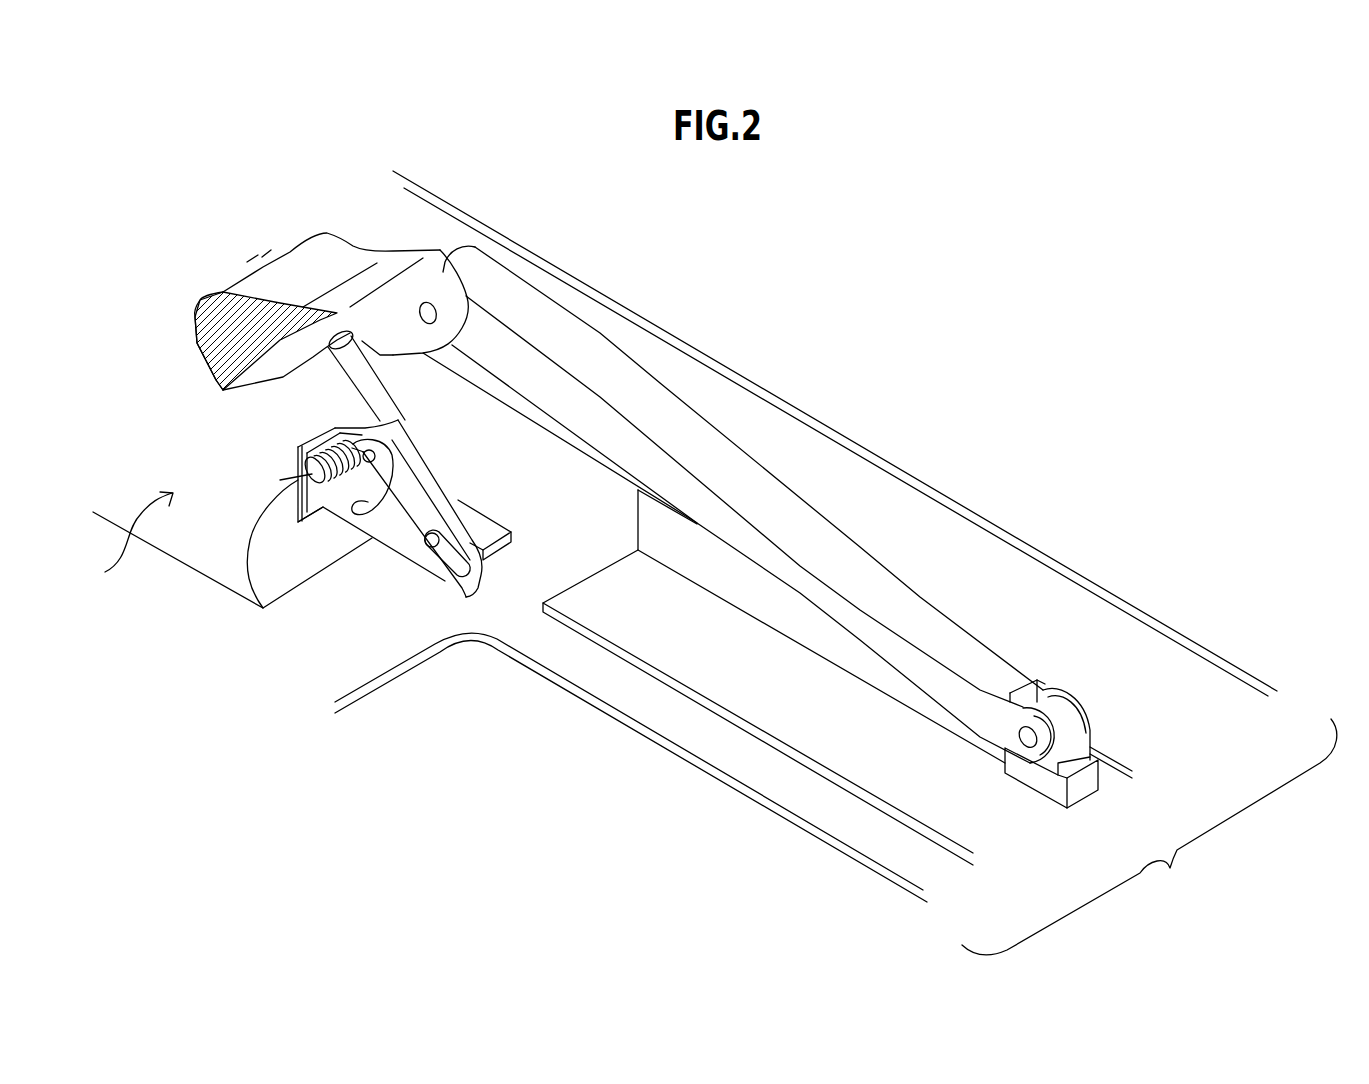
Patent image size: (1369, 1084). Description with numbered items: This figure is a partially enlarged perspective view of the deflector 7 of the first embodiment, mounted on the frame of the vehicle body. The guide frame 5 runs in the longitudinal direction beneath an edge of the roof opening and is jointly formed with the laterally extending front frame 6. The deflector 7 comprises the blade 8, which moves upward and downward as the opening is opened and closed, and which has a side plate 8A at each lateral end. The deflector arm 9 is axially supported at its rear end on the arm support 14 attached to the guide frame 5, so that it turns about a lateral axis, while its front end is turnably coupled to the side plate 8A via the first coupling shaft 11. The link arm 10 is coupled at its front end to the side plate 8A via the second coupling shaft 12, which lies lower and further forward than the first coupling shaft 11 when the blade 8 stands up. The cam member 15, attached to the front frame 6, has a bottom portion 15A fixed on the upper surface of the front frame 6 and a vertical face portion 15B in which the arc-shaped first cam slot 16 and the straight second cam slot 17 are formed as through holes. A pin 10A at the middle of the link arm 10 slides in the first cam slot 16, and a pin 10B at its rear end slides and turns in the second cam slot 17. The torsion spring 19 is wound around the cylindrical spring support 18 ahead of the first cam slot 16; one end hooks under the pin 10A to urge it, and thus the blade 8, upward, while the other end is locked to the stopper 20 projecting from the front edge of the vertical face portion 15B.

The guide frame 5 is at (957, 506).
The front frame 6 is at (337, 678).
The deflector 7 is at (128, 540).
The blade 8 is at (307, 253).
The side plate 8A is at (413, 293).
The deflector arm 9 is at (738, 478).
The link arm 10 is at (345, 397).
The pin 10A is at (400, 428).
The pin 10B is at (429, 543).
The first coupling shaft 11 is at (429, 302).
The second coupling shaft 12 is at (278, 378).
The arm support 14 is at (1085, 790).
The cam member 15 is at (543, 531).
The bottom portion 15A is at (487, 528).
The vertical face portion 15B is at (490, 578).
The first cam slot 16 is at (370, 515).
The second cam slot 17 is at (448, 572).
The spring support 18 is at (313, 530).
The torsion spring 19 is at (313, 472).
The stopper 20 is at (298, 449).